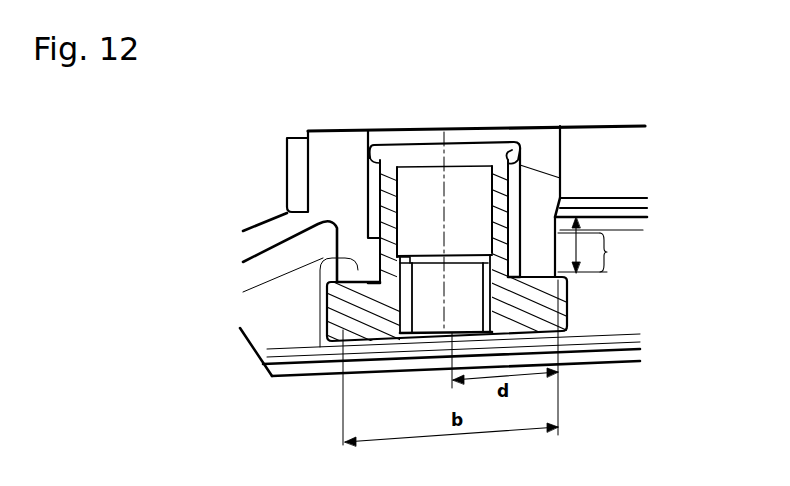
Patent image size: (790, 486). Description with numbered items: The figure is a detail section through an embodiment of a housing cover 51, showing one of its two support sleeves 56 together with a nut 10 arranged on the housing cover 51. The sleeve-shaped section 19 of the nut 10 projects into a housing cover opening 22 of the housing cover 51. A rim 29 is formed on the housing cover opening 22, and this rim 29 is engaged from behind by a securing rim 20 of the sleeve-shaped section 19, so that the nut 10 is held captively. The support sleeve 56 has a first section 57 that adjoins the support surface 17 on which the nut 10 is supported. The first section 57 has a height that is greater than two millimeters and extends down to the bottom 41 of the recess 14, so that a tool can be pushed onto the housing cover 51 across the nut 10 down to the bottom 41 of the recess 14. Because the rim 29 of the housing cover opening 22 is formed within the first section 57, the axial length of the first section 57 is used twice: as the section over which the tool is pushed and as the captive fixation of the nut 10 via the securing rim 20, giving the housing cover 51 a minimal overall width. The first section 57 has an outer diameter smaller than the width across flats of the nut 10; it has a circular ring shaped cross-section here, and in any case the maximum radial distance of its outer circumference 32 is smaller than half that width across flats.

The nut 10 is at (369, 322).
The recess 14 is at (617, 317).
The support surface 17 is at (333, 246).
The sleeve-shaped section 19 is at (387, 208).
The securing rim 20 is at (507, 143).
The housing cover opening 22 is at (387, 136).
The rim 29 is at (520, 228).
The outer circumference 32 is at (557, 250).
The bottom 41 is at (643, 218).
The housing cover 51 is at (315, 142).
The support sleeve 56 is at (342, 246).
The first section 57 is at (598, 245).